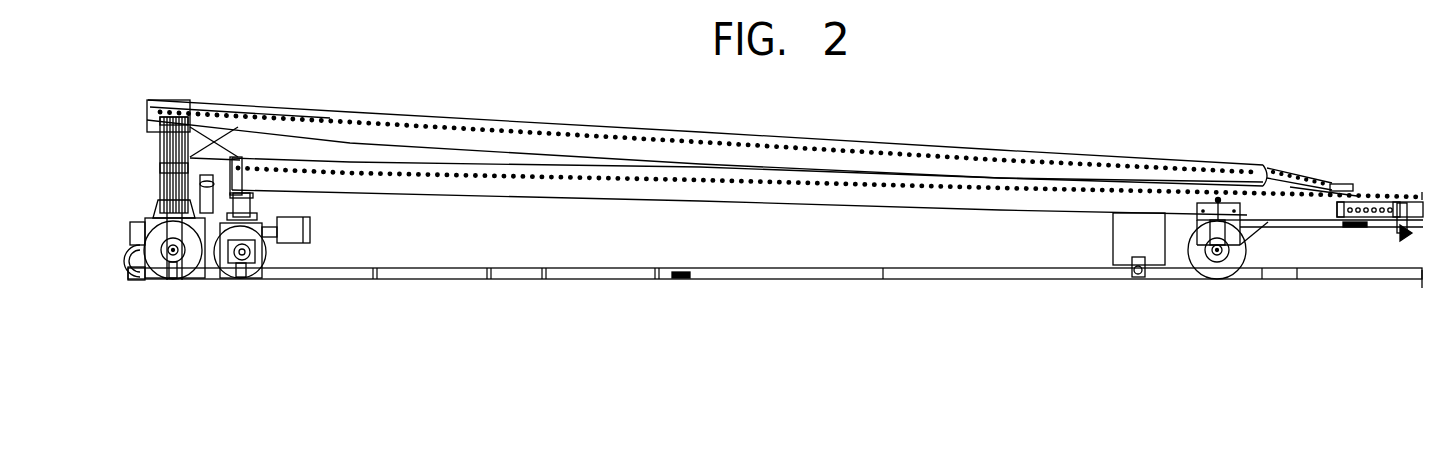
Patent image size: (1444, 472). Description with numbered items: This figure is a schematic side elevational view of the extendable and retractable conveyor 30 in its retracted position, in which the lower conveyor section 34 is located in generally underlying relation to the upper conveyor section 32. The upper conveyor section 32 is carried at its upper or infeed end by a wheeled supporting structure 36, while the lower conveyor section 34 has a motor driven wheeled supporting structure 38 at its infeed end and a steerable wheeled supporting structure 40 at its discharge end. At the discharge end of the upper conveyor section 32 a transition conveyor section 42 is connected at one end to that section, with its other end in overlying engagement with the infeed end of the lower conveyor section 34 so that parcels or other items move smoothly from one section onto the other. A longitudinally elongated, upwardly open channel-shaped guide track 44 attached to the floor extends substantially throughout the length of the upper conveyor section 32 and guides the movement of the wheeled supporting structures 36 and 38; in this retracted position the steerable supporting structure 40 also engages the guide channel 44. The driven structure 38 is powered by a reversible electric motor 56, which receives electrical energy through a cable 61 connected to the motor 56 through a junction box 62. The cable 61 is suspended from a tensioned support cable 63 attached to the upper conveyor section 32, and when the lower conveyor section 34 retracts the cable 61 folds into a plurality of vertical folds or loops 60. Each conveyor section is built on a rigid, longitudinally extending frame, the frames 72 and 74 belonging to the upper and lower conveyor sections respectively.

The extendable and retractable conveyor 30 is at (547, 113).
The upper conveyor section 32 is at (399, 139).
The lower conveyor section 34 is at (486, 197).
The wheeled supporting structure 36 is at (162, 285).
The motor driven wheeled supporting structure 38 is at (231, 285).
The steerable wheeled supporting structure 40 is at (1208, 285).
The transition conveyor section 42 is at (1305, 171).
The guide track 44 is at (648, 282).
The reversible electric motor 56 is at (292, 237).
The vertical folds or loops 60 is at (160, 160).
The cable 61 is at (182, 112).
The junction box 62 is at (267, 189).
The tensioned support cable 63 is at (223, 113).
The frame 72 is at (1048, 174).
The frame 74 is at (1035, 199).